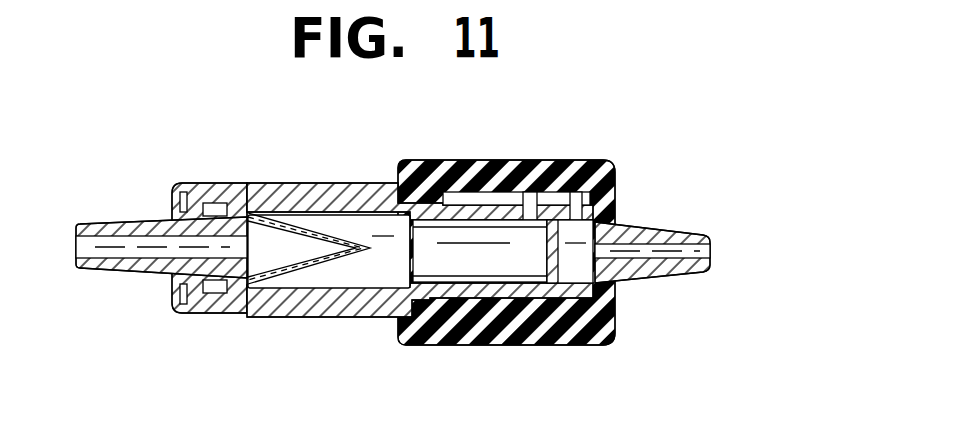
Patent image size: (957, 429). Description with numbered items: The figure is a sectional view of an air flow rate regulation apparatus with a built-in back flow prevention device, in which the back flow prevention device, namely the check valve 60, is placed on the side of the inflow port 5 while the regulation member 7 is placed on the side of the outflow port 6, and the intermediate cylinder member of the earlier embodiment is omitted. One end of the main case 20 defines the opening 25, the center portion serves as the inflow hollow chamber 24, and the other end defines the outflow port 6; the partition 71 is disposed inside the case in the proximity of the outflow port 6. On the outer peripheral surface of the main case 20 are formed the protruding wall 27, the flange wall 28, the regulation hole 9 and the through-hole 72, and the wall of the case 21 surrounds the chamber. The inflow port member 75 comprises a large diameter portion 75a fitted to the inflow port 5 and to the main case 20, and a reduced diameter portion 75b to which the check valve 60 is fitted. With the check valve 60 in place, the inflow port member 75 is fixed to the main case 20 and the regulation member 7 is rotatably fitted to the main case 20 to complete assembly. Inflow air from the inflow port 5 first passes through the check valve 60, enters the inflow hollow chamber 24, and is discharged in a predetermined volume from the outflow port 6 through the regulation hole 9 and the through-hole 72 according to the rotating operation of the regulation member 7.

The inflow port 5 is at (77, 246).
The outflow port 6 is at (710, 251).
The regulation member 7 is at (518, 323).
The regulation hole 9 is at (531, 214).
The main case 20 is at (298, 307).
The upper sleeve body 21 is at (361, 183).
The inflow hollow chamber 24 is at (382, 273).
The opening 25 is at (405, 250).
The protruding wall 27 is at (428, 178).
The flange wall 28 is at (410, 325).
The check valve 60 is at (313, 222).
The partition 71 is at (557, 247).
The through-hole 72 is at (573, 216).
The inflow port member 75 is at (177, 280).
The large diameter portion 75a is at (187, 203).
The reduced diameter portion 75b is at (230, 222).